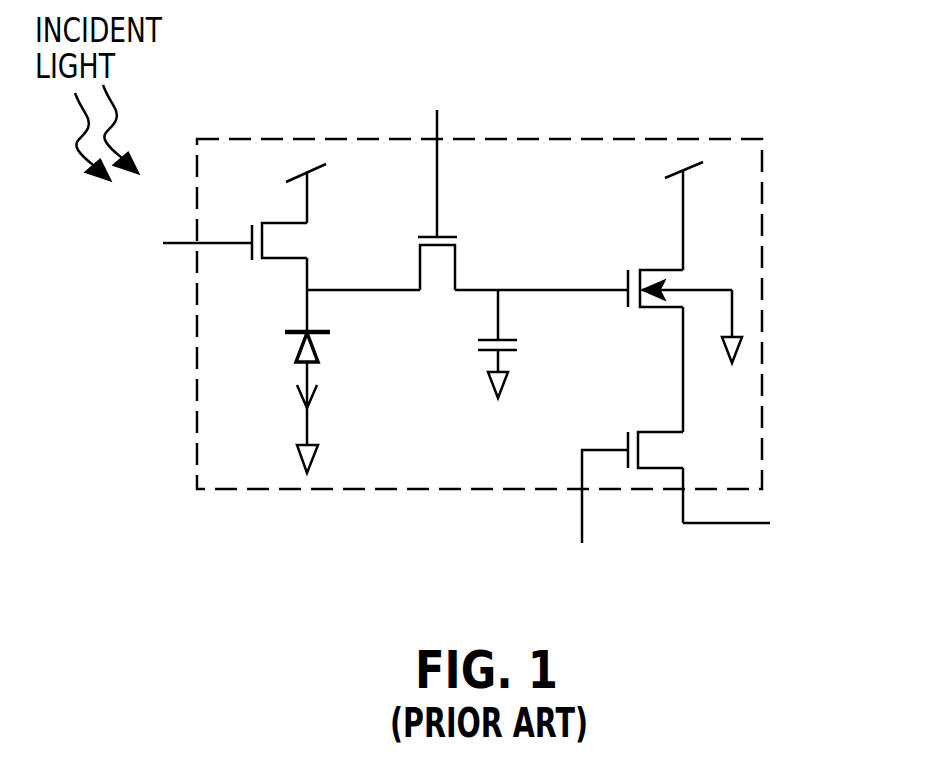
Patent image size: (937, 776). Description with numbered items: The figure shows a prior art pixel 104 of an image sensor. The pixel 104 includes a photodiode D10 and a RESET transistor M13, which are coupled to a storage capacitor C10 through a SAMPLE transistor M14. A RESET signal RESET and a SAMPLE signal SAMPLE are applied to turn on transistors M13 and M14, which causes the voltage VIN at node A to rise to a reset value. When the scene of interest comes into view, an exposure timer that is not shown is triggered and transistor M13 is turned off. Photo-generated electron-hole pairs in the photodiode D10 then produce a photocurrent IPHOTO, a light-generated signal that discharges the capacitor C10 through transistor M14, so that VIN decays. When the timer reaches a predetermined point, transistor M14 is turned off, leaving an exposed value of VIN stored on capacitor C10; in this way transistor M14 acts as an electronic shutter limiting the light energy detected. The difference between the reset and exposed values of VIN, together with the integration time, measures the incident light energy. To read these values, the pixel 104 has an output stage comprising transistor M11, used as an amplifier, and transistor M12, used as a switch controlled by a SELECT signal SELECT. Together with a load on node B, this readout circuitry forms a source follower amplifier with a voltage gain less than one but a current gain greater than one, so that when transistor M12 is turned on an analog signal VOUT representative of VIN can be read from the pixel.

The prior art pixel 104 is at (258, 490).
The RESET transistor M13 is at (309, 227).
The SAMPLE transistor M14 is at (447, 285).
The amplifier transistor M11 is at (687, 297).
The switch transistor M12 is at (687, 477).
The photodiode D10 is at (335, 381).
The storage capacitor C10 is at (525, 344).
The node A is at (577, 289).
The node B is at (712, 525).
The RESET signal RESET is at (163, 245).
The SAMPLE signal SAMPLE is at (430, 155).
The select signal line SELECT is at (573, 515).
The node A voltage VIN is at (541, 268).
The analog output signal VOUT is at (768, 528).
The photocurrent IPHOTO is at (371, 401).